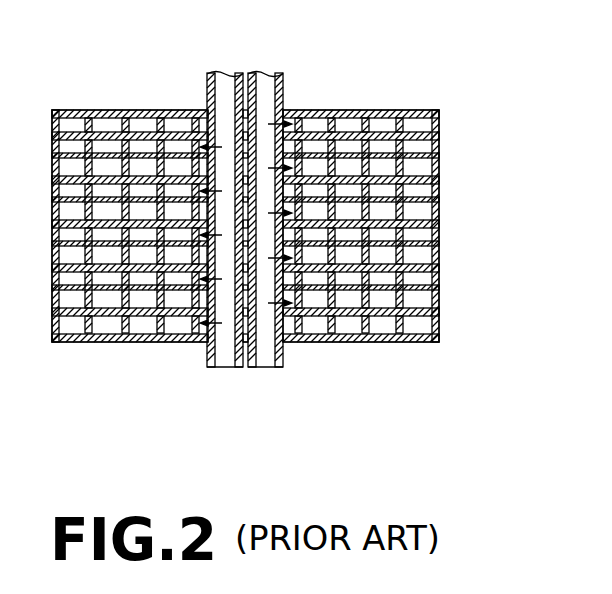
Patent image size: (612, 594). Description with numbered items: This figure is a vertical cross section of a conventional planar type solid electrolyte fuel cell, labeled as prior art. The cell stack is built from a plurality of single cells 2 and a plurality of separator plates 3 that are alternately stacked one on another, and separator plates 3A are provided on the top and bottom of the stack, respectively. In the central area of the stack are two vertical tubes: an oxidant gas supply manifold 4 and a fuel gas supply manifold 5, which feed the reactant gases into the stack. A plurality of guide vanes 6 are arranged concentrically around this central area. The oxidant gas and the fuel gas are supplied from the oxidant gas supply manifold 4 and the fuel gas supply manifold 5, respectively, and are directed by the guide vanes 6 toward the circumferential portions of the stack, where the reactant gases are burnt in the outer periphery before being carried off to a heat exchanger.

The single cell 2 is at (440, 226).
The separator plate 3 is at (440, 153).
The separator plate 3A is at (440, 123).
The oxidant gas supply manifold 4 is at (283, 93).
The fuel gas supply manifold 5 is at (207, 93).
The guide vane 6 is at (393, 297).